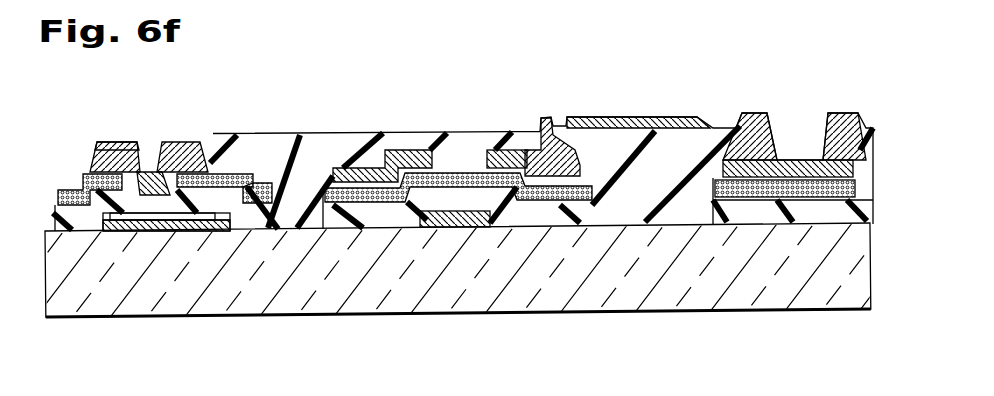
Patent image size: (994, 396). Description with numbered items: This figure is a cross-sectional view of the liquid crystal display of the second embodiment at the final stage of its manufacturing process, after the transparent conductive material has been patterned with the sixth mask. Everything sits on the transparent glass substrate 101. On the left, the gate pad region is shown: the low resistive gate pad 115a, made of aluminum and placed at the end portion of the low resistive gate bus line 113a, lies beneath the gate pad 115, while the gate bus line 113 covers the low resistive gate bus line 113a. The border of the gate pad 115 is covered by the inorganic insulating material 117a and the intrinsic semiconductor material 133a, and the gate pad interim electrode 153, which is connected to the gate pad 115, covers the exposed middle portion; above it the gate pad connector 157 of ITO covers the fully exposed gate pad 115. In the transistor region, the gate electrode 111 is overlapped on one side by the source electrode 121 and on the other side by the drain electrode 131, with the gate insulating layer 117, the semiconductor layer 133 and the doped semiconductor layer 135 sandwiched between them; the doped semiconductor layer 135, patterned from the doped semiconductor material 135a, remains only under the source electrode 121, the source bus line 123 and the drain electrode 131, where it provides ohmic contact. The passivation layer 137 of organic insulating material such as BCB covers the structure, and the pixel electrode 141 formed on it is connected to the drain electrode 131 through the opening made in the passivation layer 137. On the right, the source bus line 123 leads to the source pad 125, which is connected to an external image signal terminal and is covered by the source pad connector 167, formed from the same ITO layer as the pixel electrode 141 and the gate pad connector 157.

The transparent glass substrate 101 is at (651, 287).
The gate electrode 111 is at (452, 228).
The gate bus line 113 is at (227, 231).
The low resistive gate bus line 113a is at (187, 231).
The gate pad 115 is at (112, 232).
The low resistive gate pad 115a is at (152, 231).
The gate insulating layer 117 is at (372, 229).
The inorganic insulating material 117a is at (255, 155).
The source electrode 121 is at (428, 150).
The source bus line 123 is at (337, 137).
The source pad 125 is at (795, 160).
The drain electrode 131 is at (567, 227).
The semiconductor layer 133 is at (517, 227).
The intrinsic semiconductor material 133a is at (57, 191).
The doped semiconductor layer 135 is at (390, 152).
The doped semiconductor material 135a is at (97, 143).
The passivation layer 137 is at (711, 127).
The pixel electrode 141 is at (628, 118).
The gate pad interim electrode 153 is at (150, 176).
The gate pad connector 157 is at (117, 141).
The source pad connector 167 is at (847, 113).